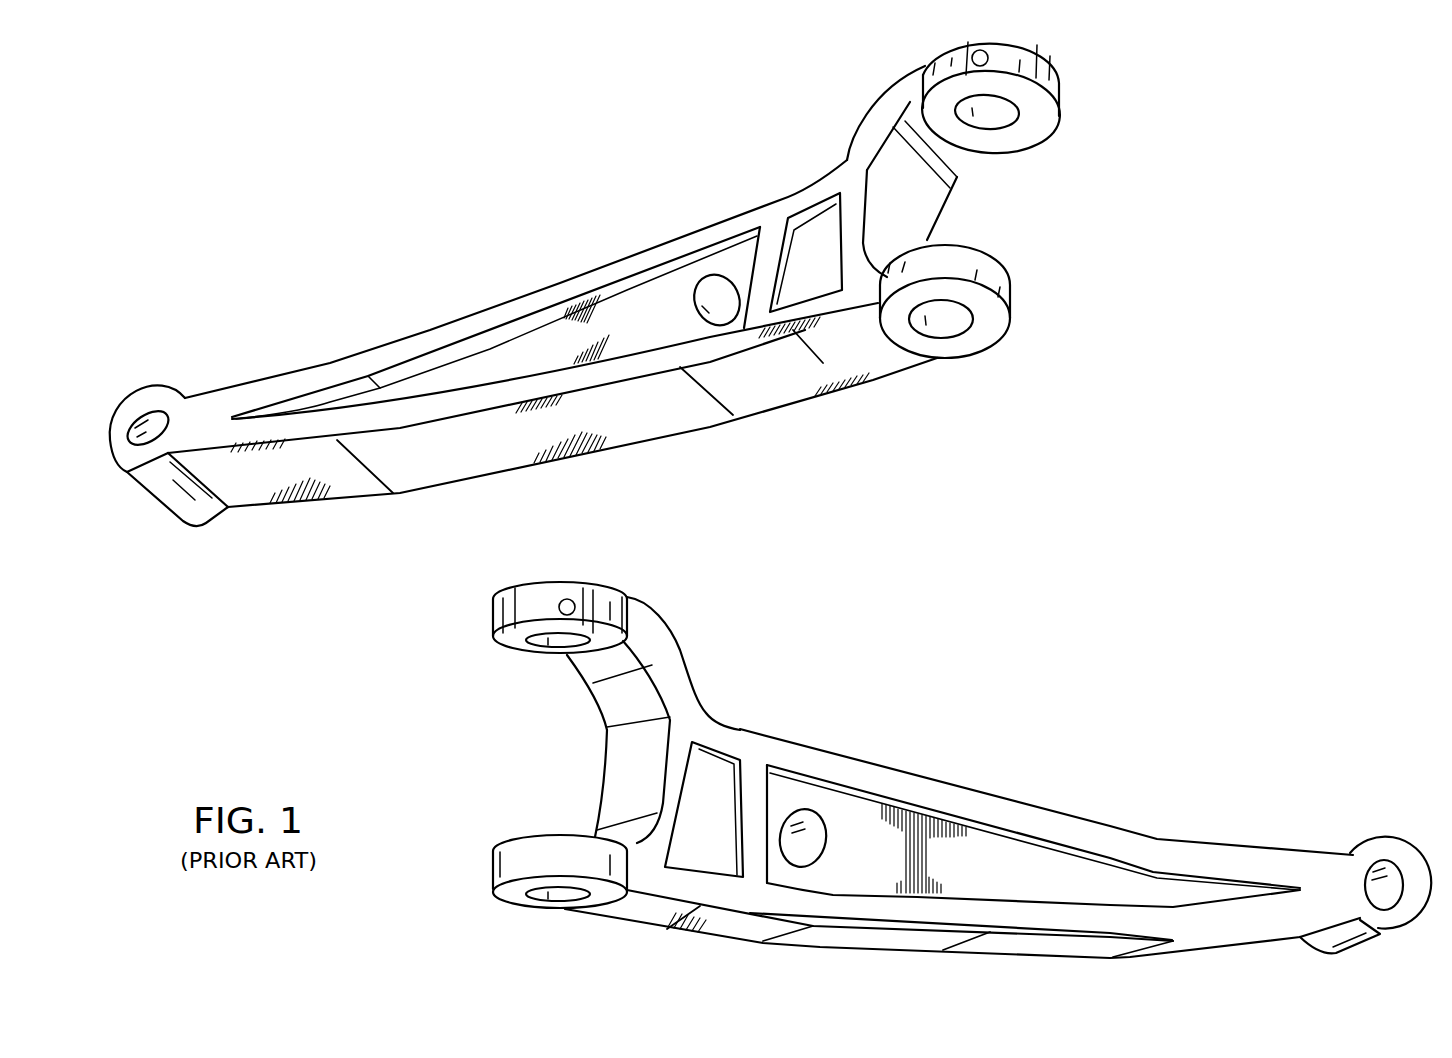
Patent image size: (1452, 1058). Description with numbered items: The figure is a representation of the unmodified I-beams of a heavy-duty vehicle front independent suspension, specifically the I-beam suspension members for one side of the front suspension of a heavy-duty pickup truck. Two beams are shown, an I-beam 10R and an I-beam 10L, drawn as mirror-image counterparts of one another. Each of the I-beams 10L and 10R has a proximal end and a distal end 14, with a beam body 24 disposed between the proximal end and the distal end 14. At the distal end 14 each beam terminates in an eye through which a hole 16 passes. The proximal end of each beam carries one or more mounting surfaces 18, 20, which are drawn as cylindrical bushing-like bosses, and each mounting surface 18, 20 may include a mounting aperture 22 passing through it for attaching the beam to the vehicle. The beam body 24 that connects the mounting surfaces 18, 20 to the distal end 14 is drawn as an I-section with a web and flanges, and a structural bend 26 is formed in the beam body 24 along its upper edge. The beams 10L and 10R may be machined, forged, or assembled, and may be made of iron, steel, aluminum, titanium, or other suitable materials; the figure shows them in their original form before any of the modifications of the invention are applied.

The I-beam 10R is at (351, 526).
The I-beam 10L is at (1136, 761).
The distal end 14 is at (150, 392).
The ball joint hole 16 is at (162, 418).
The mounting surface 18 is at (1059, 108).
The mounting surface 20 is at (1012, 313).
The mounting aperture 22 is at (998, 128).
The beam body 24 is at (672, 430).
The structural bend 26 is at (362, 354).